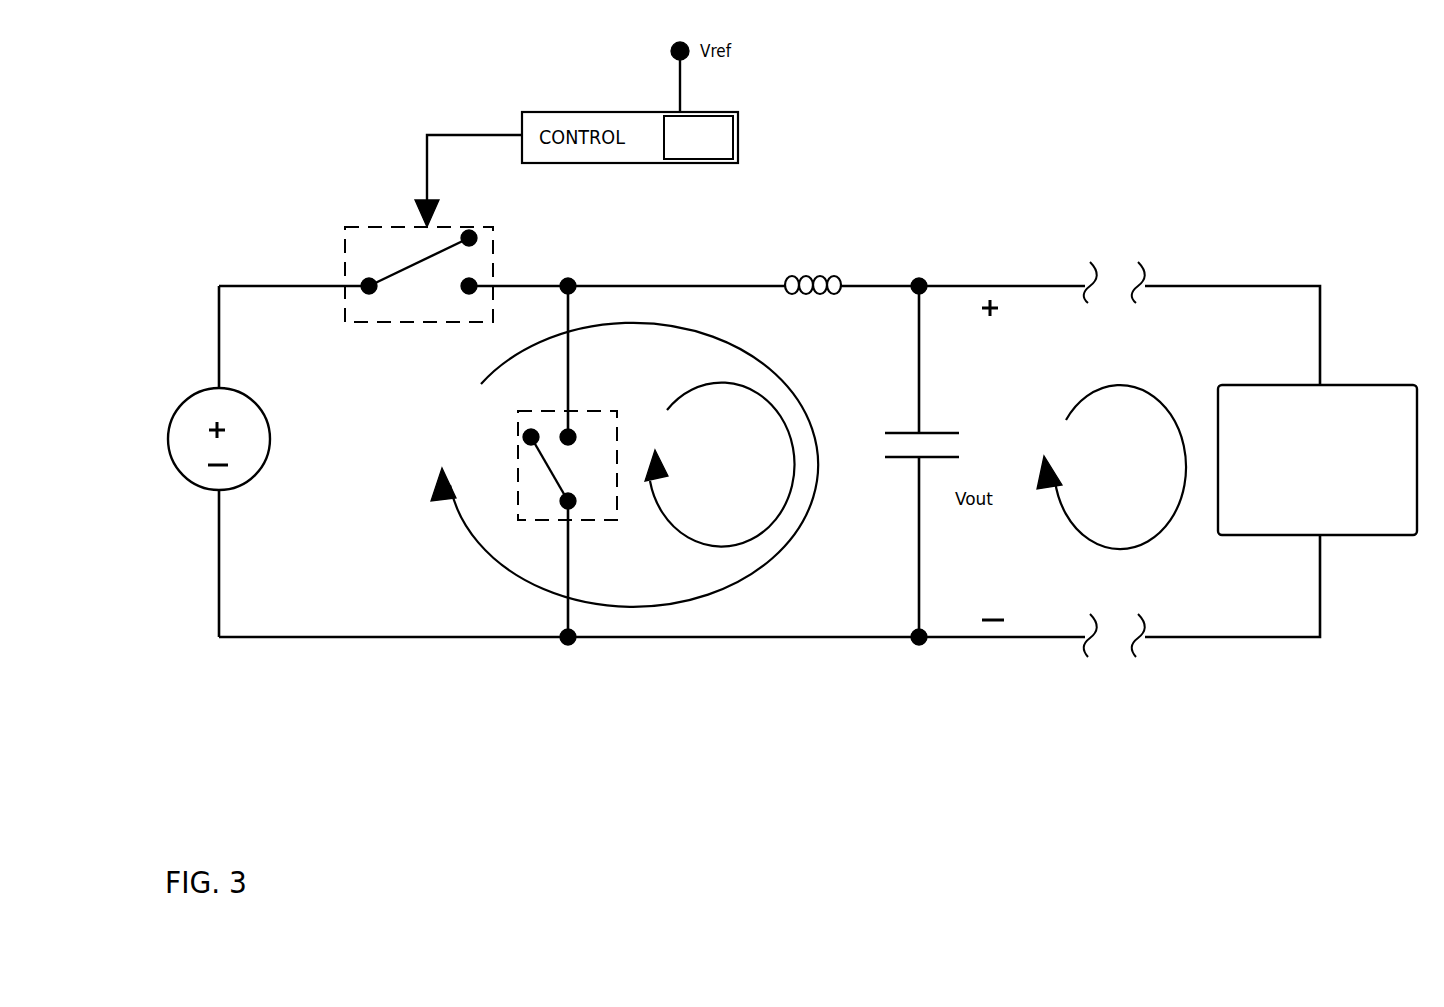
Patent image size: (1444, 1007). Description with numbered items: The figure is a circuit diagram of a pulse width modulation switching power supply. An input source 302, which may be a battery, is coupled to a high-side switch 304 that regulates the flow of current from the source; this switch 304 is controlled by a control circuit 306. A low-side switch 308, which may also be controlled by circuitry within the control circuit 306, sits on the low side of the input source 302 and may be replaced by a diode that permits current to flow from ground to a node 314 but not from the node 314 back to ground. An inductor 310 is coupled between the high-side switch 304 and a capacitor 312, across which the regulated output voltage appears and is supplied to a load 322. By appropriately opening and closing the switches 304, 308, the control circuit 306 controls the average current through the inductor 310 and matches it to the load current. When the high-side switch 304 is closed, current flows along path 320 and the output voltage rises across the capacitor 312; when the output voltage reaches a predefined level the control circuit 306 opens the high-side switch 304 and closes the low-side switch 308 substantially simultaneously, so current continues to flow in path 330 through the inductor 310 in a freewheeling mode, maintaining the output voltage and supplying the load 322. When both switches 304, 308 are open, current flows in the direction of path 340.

The input source 302 is at (256, 408).
The high-side switch 304 is at (350, 227).
The control circuit 306 is at (698, 165).
The low-side switch 308 is at (599, 411).
The inductor 310 is at (834, 277).
The capacitor 312 is at (894, 433).
The node 314 is at (568, 279).
The path 320 is at (735, 352).
The load 322 is at (1241, 385).
The path 330 is at (717, 382).
The path 340 is at (1107, 385).